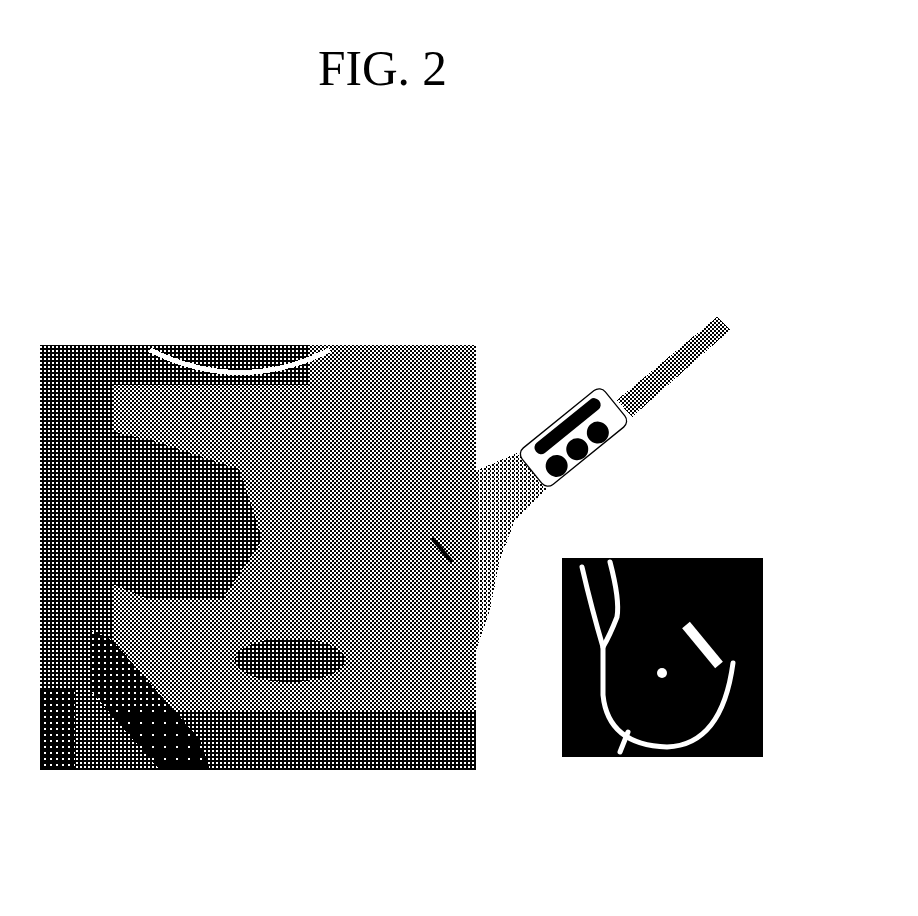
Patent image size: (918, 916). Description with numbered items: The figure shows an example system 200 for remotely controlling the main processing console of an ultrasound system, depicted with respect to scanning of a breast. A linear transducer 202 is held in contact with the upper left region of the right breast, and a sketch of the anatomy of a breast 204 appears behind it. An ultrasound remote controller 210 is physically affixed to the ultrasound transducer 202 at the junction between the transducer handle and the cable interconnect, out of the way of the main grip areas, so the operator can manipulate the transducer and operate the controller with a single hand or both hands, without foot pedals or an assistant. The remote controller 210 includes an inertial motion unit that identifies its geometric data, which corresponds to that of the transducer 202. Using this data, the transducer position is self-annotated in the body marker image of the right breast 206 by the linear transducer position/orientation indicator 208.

The system 200 is at (562, 440).
The linear transducer 202 is at (671, 338).
The sketch of the anatomy of a breast 204 is at (264, 342).
The body marker image of the right breast 206 is at (688, 623).
The linear transducer position/orientation indicator 208 is at (716, 633).
The ultrasound remote controller 210 is at (621, 441).